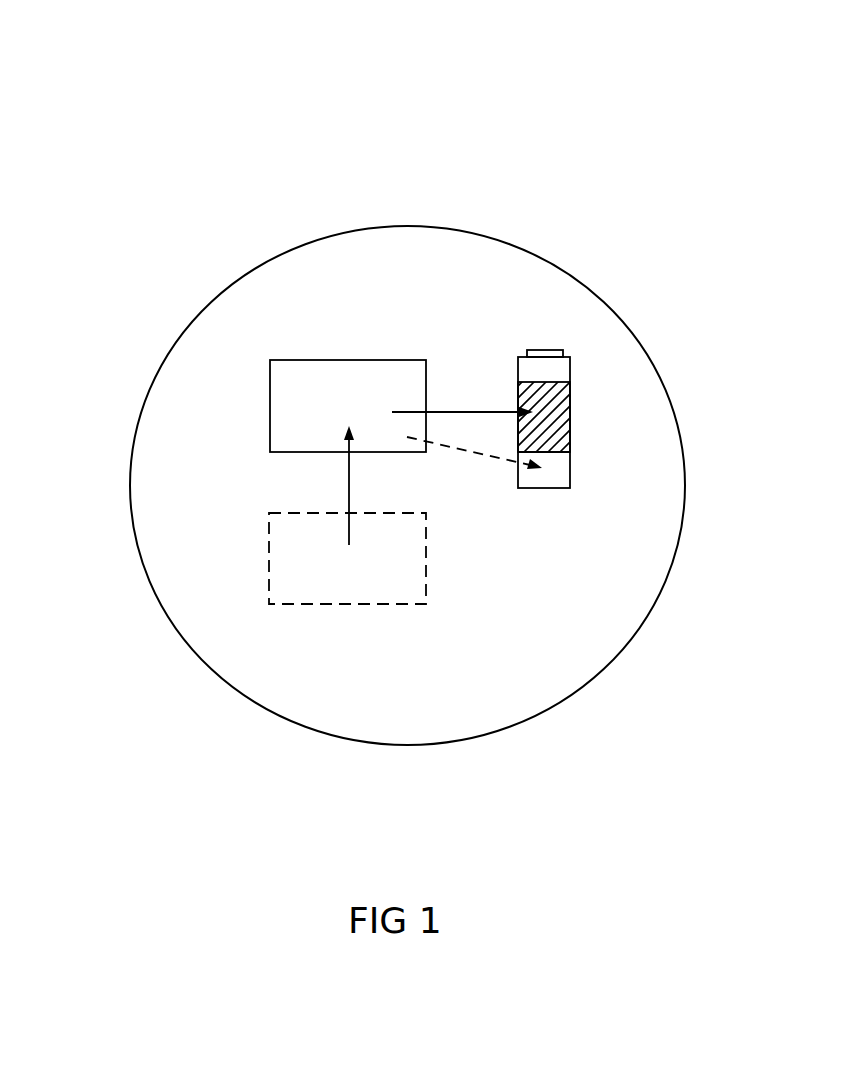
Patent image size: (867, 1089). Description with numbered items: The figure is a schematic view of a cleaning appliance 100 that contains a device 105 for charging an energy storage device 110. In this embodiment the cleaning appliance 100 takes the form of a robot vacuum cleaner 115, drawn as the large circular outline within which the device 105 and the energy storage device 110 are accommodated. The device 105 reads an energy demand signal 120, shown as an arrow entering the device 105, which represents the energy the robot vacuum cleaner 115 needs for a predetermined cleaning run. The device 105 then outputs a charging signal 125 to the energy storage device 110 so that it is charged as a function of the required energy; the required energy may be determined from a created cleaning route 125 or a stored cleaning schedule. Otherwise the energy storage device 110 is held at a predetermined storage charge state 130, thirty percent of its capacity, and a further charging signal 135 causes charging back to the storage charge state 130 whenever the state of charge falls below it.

The cleaning appliance 100 is at (144, 86).
The robot vacuum cleaner 115 is at (241, 193).
The device for charging an energy storage device 105 is at (323, 378).
The energy storage device 110 is at (547, 327).
The energy demand signal 120 is at (348, 477).
The charging signal 125 is at (477, 412).
The predetermined storage charge state 130 is at (552, 470).
The charging signal 135 is at (488, 456).